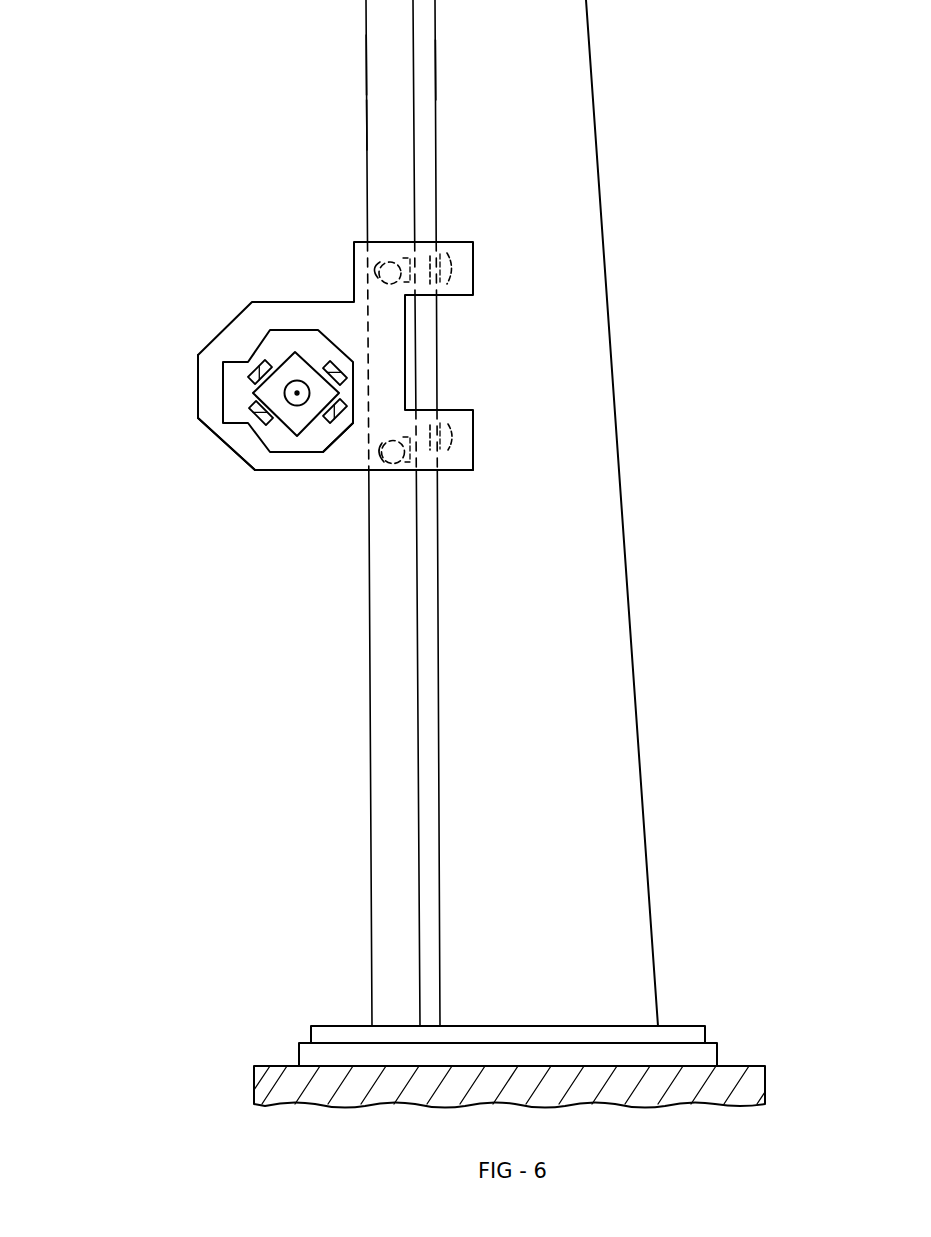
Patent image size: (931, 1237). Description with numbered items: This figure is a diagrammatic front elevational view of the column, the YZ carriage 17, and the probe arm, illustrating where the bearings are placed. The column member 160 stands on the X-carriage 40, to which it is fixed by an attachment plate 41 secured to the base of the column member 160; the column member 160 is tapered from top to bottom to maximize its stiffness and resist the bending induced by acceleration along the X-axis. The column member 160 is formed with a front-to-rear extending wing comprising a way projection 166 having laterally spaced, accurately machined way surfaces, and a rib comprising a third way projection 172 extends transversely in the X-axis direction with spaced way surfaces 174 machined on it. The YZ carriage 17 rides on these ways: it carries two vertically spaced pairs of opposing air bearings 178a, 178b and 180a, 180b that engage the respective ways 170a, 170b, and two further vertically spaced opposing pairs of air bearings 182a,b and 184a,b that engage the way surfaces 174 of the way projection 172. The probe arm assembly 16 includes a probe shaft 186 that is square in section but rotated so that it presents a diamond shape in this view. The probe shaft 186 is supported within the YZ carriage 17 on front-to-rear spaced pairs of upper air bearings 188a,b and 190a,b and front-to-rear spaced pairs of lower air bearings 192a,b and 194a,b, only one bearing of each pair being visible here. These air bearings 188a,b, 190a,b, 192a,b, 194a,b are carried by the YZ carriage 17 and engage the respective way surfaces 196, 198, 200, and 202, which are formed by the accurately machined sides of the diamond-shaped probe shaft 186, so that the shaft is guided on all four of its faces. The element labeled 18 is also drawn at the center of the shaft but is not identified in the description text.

The probe arm assembly 16 is at (183, 362).
The YZ carriage 17 is at (280, 474).
The central pivot pin 18 is at (283, 393).
The X-carriage 40 is at (765, 1085).
The attachment plate 41 is at (717, 1045).
The column member 160 is at (683, 612).
The way projection 166 is at (438, 72).
The way 170a is at (418, 785).
The way 170b is at (440, 800).
The third way projection 172 is at (337, 119).
The way surfaces 174 is at (377, 65).
The air bearing 178a is at (403, 258).
The air bearing 178b is at (445, 263).
The air bearing 180a is at (410, 450).
The air bearing 180b is at (447, 432).
The air bearings 182a,b is at (380, 267).
The air bearings 184a,b is at (397, 468).
The probe shaft 186 is at (278, 427).
The upper air bearings 188a,b is at (262, 366).
The upper air bearings 190a,b is at (350, 366).
The lower air bearings 192a,b is at (250, 415).
The lower air bearings 194a,b is at (340, 460).
The way surface 196 is at (250, 360).
The way surface 198 is at (307, 353).
The way surface 200 is at (313, 470).
The way surface 202 is at (252, 472).